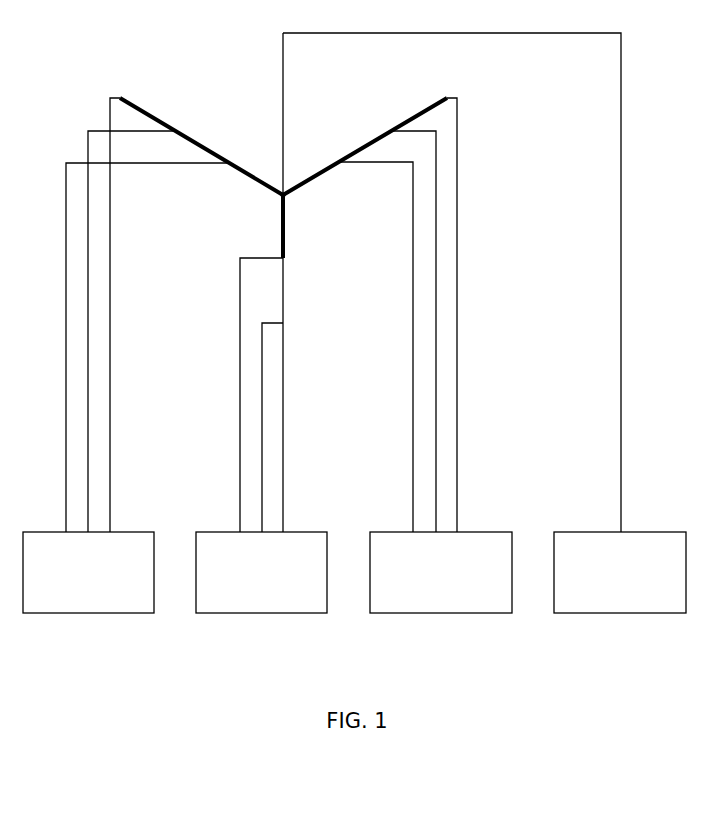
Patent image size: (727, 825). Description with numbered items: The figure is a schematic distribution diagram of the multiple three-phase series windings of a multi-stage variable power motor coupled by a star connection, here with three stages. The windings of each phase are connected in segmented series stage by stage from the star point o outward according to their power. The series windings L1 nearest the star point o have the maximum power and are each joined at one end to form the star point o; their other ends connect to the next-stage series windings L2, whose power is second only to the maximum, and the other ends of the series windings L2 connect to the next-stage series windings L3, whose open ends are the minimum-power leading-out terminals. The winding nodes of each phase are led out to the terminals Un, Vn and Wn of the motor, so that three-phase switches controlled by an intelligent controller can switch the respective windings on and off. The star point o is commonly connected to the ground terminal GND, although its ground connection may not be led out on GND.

The series windings L1 is at (239, 342).
The next-stage series windings L2 is at (262, 328).
The next-stage series windings L3 is at (283, 308).
The star point o is at (291, 119).
The U-phase terminals Un is at (88, 572).
The V-phase terminals Vn is at (261, 572).
The W-phase terminals Wn is at (441, 572).
The ground terminal GND is at (484, 323).